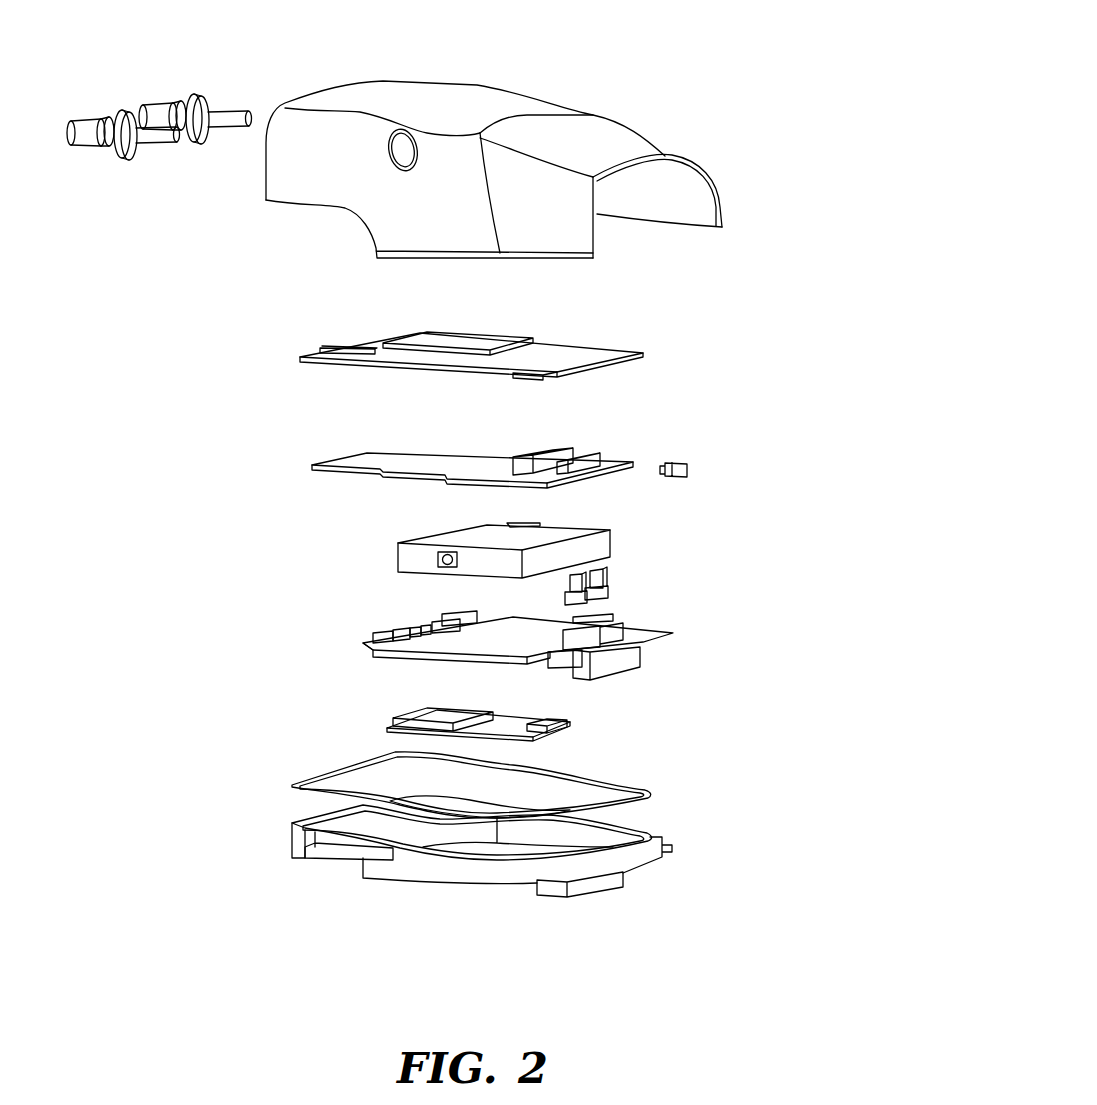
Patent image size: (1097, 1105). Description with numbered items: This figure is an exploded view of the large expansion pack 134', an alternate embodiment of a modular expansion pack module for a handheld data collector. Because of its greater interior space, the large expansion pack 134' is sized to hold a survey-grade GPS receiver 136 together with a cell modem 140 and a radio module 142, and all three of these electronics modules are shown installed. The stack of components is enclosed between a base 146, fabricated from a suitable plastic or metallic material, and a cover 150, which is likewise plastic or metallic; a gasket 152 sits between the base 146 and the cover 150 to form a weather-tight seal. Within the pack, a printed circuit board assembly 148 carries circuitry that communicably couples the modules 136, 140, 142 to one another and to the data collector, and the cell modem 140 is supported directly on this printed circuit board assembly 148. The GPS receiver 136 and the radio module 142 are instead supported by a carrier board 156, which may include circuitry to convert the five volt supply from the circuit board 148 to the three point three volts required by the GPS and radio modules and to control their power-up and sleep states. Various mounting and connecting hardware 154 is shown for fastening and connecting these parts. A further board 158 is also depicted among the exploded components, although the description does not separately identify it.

The large expansion pack 134' is at (428, 83).
The cover 150 is at (640, 142).
The GPS receiver 136 is at (645, 353).
The mounting/connecting hardware 154 is at (594, 457).
The carrier board 156 is at (613, 460).
The circuit board 158 is at (348, 458).
The radio module 142 is at (405, 557).
The printed circuit board assembly 148 is at (647, 637).
The cell modem 140 is at (570, 723).
The gasket 152 is at (653, 797).
The base 146 is at (647, 857).